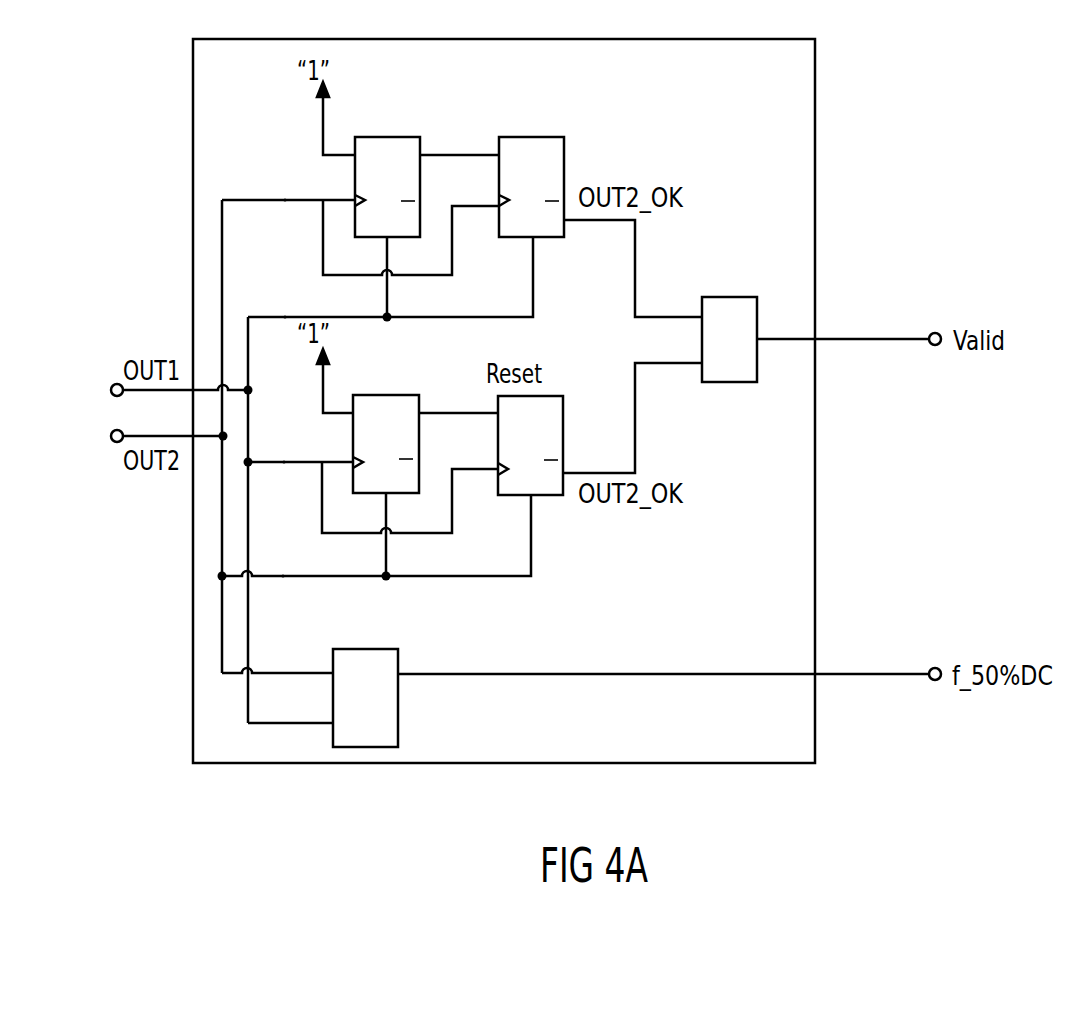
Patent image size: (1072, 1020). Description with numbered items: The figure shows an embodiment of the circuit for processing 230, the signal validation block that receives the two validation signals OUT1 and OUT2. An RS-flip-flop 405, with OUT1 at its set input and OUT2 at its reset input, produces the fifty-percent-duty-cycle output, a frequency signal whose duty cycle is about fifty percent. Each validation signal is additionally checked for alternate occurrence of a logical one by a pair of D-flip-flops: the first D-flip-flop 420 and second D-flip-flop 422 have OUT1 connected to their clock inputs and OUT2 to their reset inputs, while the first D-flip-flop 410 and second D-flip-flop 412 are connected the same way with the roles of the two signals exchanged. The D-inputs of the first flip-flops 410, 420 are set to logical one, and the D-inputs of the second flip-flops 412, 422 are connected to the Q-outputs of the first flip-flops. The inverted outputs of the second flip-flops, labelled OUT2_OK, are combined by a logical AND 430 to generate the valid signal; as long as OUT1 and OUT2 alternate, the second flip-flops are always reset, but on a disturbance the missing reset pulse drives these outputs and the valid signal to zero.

The circuit for processing 230 is at (813, 764).
The RS-flip-flop 405 is at (398, 723).
The first D-flip-flop 410 is at (420, 137).
The second D-flip-flop 412 is at (564, 137).
The first D-flip-flop 420 is at (418, 395).
The second D-flip-flop 422 is at (563, 396).
The logical AND 430 is at (747, 383).